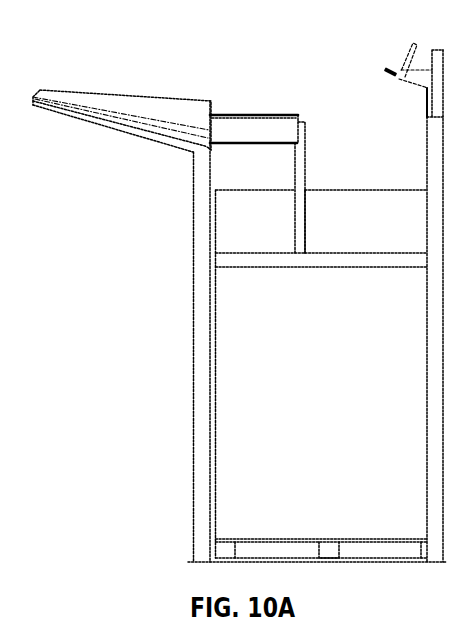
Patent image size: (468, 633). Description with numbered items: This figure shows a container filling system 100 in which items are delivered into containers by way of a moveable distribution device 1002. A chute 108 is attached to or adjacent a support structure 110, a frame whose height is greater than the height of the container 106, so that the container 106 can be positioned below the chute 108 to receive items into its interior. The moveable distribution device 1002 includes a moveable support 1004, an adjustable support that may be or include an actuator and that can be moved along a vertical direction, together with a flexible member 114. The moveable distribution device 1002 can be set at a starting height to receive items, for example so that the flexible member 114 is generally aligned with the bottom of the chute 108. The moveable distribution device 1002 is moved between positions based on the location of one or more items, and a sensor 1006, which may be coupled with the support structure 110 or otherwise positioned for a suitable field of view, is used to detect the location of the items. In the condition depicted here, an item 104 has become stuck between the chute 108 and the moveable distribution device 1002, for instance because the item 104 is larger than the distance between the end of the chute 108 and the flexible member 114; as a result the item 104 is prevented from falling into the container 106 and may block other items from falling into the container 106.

The container filling system 100 is at (118, 62).
The item 104 is at (236, 115).
The container 106 is at (215, 426).
The chute 108 is at (125, 128).
The support structure 110 is at (193, 325).
The flexible member 114 is at (301, 135).
The moveable distribution device 1002 is at (322, 151).
The moveable support 1004 is at (303, 232).
The sensor 1006 is at (392, 63).